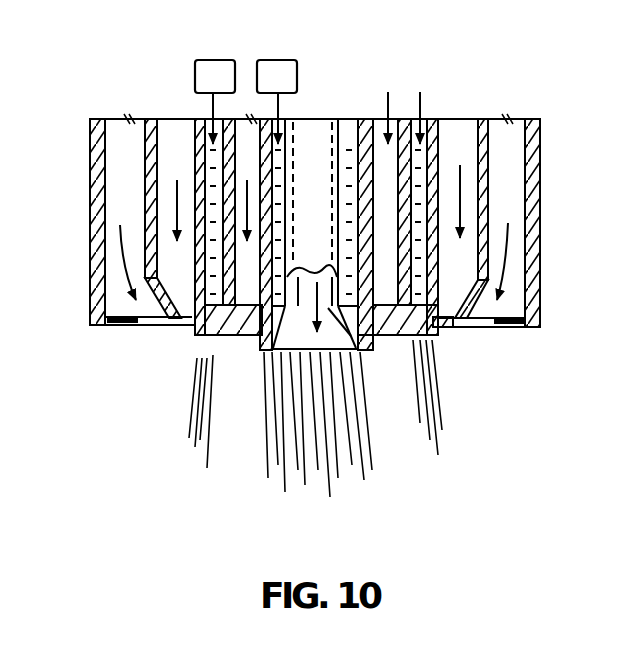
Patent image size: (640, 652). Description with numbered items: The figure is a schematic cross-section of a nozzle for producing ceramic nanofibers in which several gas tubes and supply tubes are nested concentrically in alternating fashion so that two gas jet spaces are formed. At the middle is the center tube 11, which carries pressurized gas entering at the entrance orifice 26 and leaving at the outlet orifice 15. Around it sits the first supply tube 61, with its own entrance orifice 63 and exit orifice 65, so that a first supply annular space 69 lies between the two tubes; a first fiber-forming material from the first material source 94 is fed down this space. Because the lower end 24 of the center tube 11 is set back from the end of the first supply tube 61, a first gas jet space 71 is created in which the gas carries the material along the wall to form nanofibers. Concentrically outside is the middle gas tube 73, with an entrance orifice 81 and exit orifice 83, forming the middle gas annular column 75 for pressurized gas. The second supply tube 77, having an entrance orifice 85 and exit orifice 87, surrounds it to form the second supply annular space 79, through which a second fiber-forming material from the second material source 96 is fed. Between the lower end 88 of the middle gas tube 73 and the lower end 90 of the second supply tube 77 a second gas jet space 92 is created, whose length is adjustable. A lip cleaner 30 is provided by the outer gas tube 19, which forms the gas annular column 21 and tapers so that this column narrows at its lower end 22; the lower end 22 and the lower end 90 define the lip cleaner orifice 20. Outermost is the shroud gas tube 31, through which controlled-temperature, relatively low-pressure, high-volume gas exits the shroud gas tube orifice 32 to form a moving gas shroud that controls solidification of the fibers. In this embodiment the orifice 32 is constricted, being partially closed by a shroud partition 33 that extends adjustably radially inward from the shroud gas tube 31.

The center tube 11 is at (323, 116).
The outlet orifice 15 is at (365, 423).
The outer gas tube 19 is at (145, 176).
The lip cleaner orifice 20 is at (170, 328).
The gas annular column 21 is at (160, 152).
The lower end of outer gas tube 22 is at (187, 328).
The lower end of center tube 24 is at (352, 368).
The entrance orifice 26 is at (310, 117).
The lip cleaner 30 is at (142, 190).
The shroud gas tube 31 is at (89, 232).
The shroud gas tube orifice 32 is at (147, 327).
The shroud partition 33 is at (122, 327).
The first supply tube 61 is at (378, 168).
The entrance orifice 63 is at (352, 118).
The exit orifice 65 is at (274, 358).
The first supply annular space 69 is at (352, 198).
The first gas jet space 71 is at (278, 357).
The middle gas tube 73 is at (428, 255).
The middle gas annular column 75 is at (388, 215).
The second supply tube 77 is at (446, 175).
The second supply annular space 79 is at (487, 273).
The entrance orifice 81 is at (245, 118).
The exit orifice 83 is at (433, 395).
The entrance orifice 85 is at (425, 118).
The exit orifice 87 is at (430, 346).
The lower end of middle gas tube 88 is at (230, 313).
The lower end of second supply tube 90 is at (428, 332).
The second gas jet space 92 is at (243, 333).
The first material source 94 is at (277, 183).
The second material source 96 is at (215, 182).